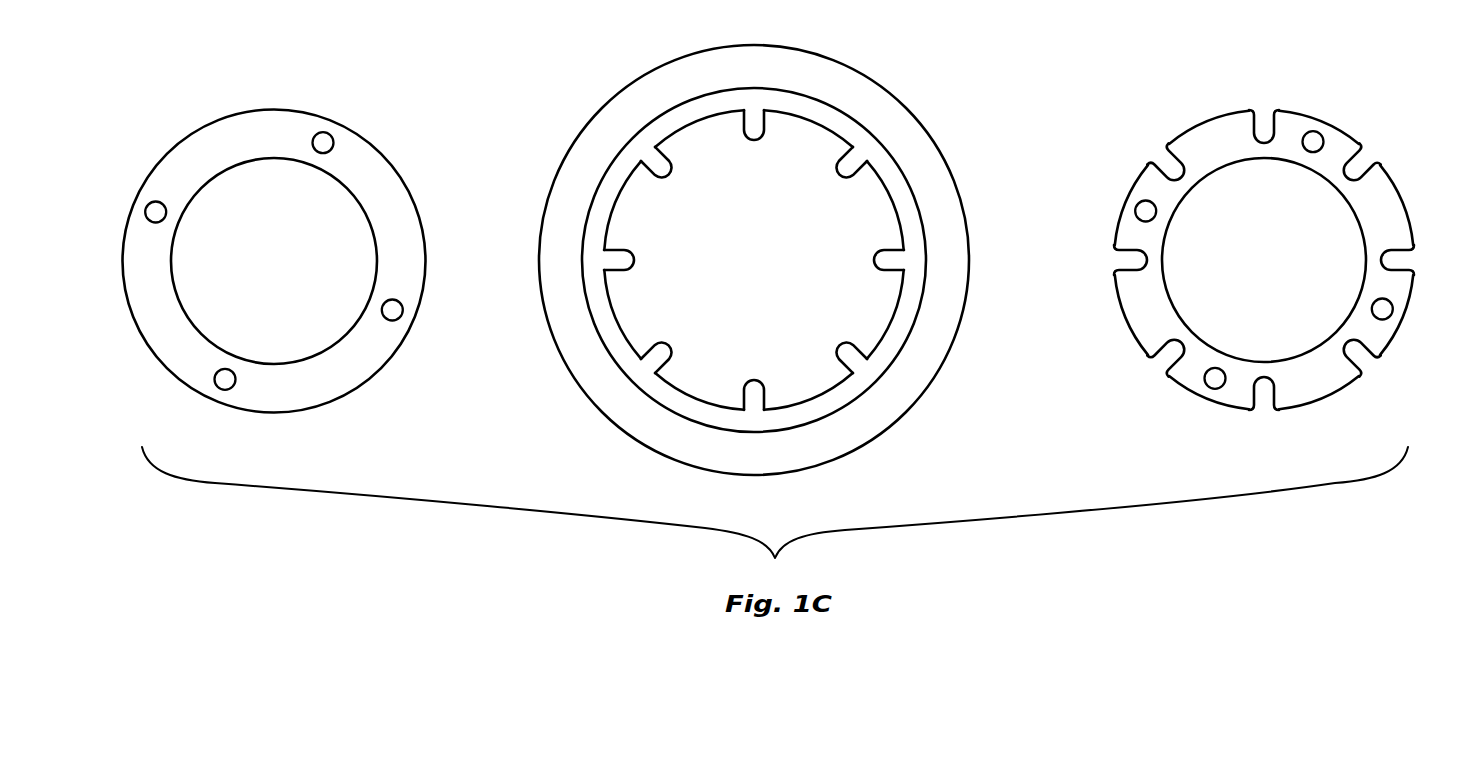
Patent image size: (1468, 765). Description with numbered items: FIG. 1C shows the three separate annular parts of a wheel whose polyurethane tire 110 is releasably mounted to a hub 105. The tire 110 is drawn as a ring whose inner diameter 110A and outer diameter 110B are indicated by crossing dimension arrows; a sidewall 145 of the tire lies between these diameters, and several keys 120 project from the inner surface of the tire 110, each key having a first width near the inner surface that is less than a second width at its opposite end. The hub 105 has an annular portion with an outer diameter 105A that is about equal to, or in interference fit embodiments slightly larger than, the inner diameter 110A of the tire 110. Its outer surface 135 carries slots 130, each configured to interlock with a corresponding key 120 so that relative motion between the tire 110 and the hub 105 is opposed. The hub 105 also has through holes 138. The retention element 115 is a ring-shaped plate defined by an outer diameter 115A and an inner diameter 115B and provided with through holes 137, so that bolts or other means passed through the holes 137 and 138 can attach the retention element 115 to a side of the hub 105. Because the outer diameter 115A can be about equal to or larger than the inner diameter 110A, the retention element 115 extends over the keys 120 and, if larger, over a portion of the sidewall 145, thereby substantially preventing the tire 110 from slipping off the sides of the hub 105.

The hub 105 is at (1210, 117).
The outer diameter of the hub 105A is at (1337, 385).
The polyurethane tire 110 is at (879, 83).
The inner diameter of the polyurethane tire 110A is at (826, 134).
The outer diameter 110B is at (859, 440).
The retention element 115 is at (388, 162).
The outer diameter of the retention elements 115A is at (350, 385).
The inner diameter of the retention elements 115B is at (323, 175).
The key 120 is at (752, 402).
The slot 130 is at (1358, 353).
The outer surface of the annular portion of the hub 135 is at (1118, 213).
The through hole 137 is at (328, 134).
The through hole 138 is at (1209, 385).
The sidewall 145 is at (793, 104).